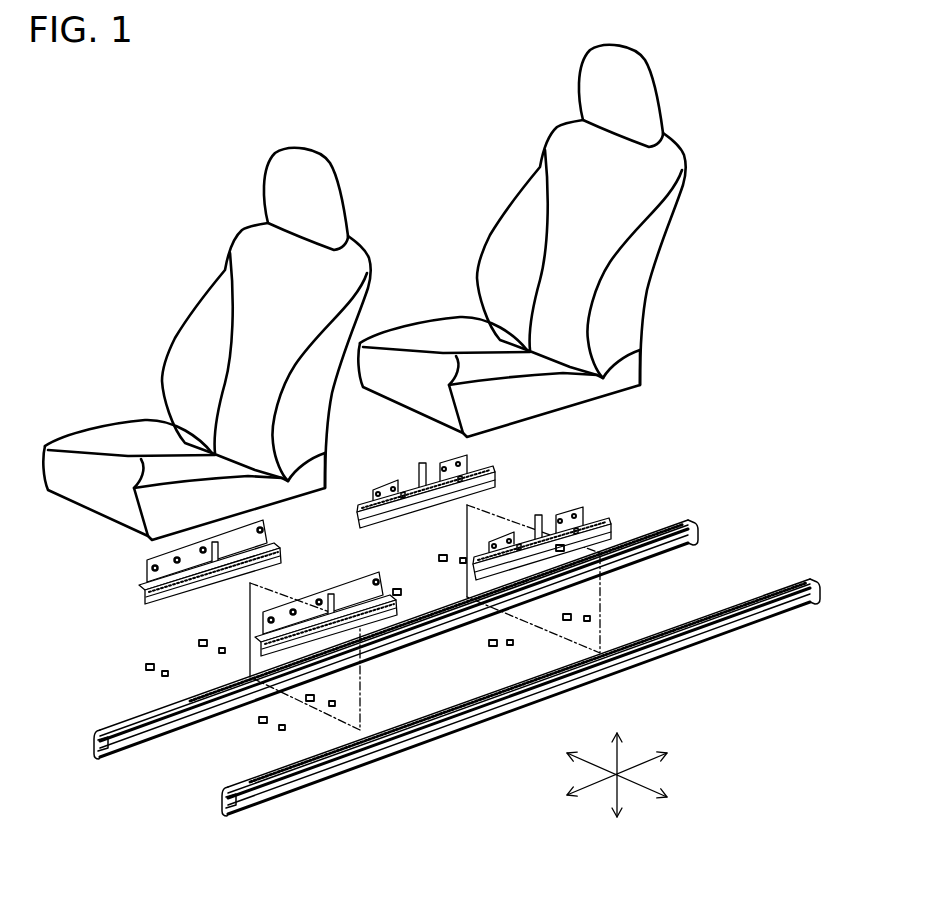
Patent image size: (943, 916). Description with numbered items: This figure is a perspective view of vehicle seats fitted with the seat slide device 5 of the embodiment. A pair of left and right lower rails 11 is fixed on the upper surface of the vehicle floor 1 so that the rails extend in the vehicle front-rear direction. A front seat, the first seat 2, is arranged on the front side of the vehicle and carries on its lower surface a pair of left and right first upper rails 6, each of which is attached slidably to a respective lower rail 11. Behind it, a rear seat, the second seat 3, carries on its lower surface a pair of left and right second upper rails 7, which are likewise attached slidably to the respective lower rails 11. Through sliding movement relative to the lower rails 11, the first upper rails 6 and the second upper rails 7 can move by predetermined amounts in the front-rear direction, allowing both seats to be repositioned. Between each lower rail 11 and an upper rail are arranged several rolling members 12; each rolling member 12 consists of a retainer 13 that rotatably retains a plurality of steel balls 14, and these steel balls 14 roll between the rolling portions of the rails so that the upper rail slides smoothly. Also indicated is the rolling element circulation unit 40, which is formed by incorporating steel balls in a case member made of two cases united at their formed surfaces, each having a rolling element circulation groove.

The vehicle floor 1 is at (776, 485).
The first seat 2 is at (121, 439).
The second seat 3 is at (439, 333).
The seat slide device 5 is at (756, 425).
The first upper rail 6 is at (248, 630).
The second upper rail 7 is at (503, 472).
The lower rail 11 is at (712, 532).
The rolling member 12 is at (170, 800).
The retainer 13 is at (261, 724).
The steel ball 14 is at (277, 727).
The rolling element circulation unit 40 is at (510, 648).